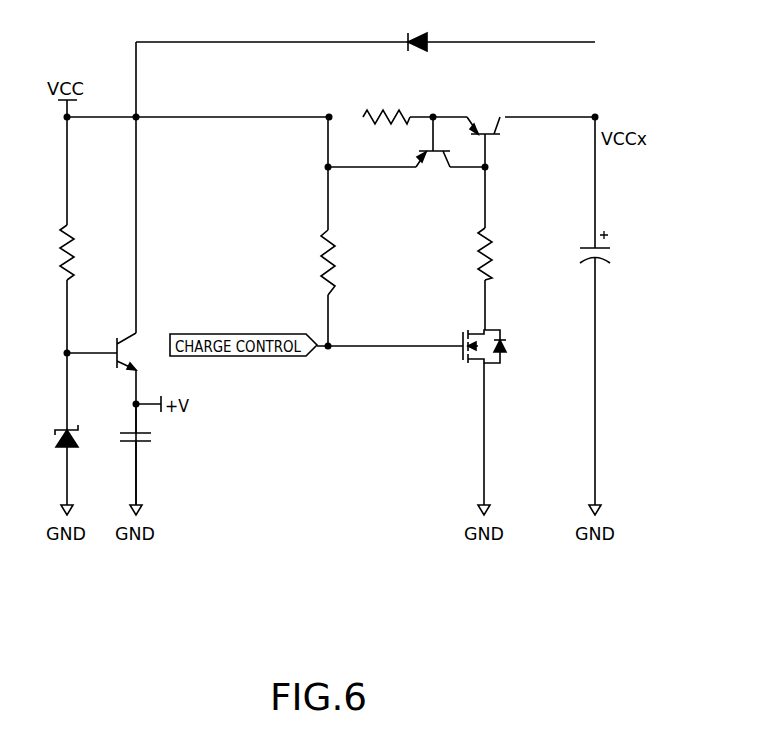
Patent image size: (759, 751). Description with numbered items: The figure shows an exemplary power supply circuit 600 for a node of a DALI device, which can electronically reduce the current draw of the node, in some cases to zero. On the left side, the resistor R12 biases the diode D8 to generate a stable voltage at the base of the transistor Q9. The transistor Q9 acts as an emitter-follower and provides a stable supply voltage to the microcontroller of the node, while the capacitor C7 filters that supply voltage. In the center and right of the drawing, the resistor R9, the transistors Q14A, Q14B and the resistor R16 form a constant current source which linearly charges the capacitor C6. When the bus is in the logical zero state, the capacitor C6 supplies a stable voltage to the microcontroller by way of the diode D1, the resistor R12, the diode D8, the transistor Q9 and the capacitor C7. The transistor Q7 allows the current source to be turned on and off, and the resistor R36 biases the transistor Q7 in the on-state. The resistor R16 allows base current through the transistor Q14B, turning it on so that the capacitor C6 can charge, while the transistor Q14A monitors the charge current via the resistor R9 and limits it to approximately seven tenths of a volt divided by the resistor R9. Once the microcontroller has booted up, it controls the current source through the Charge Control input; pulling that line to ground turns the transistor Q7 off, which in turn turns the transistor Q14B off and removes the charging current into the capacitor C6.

The diode D1 is at (399, 30).
The resistor R9 is at (382, 108).
The transistor Q14B is at (476, 129).
The transistor Q14A is at (427, 154).
The resistor R12 is at (83, 252).
The resistor R36 is at (344, 262).
The resistor R16 is at (500, 254).
The capacitor C6 is at (607, 247).
The transistor Q9 is at (116, 337).
The diode D8 is at (45, 435).
The capacitor C7 is at (149, 454).
The transistor Q7 is at (498, 348).
The power supply circuit 600 is at (590, 587).